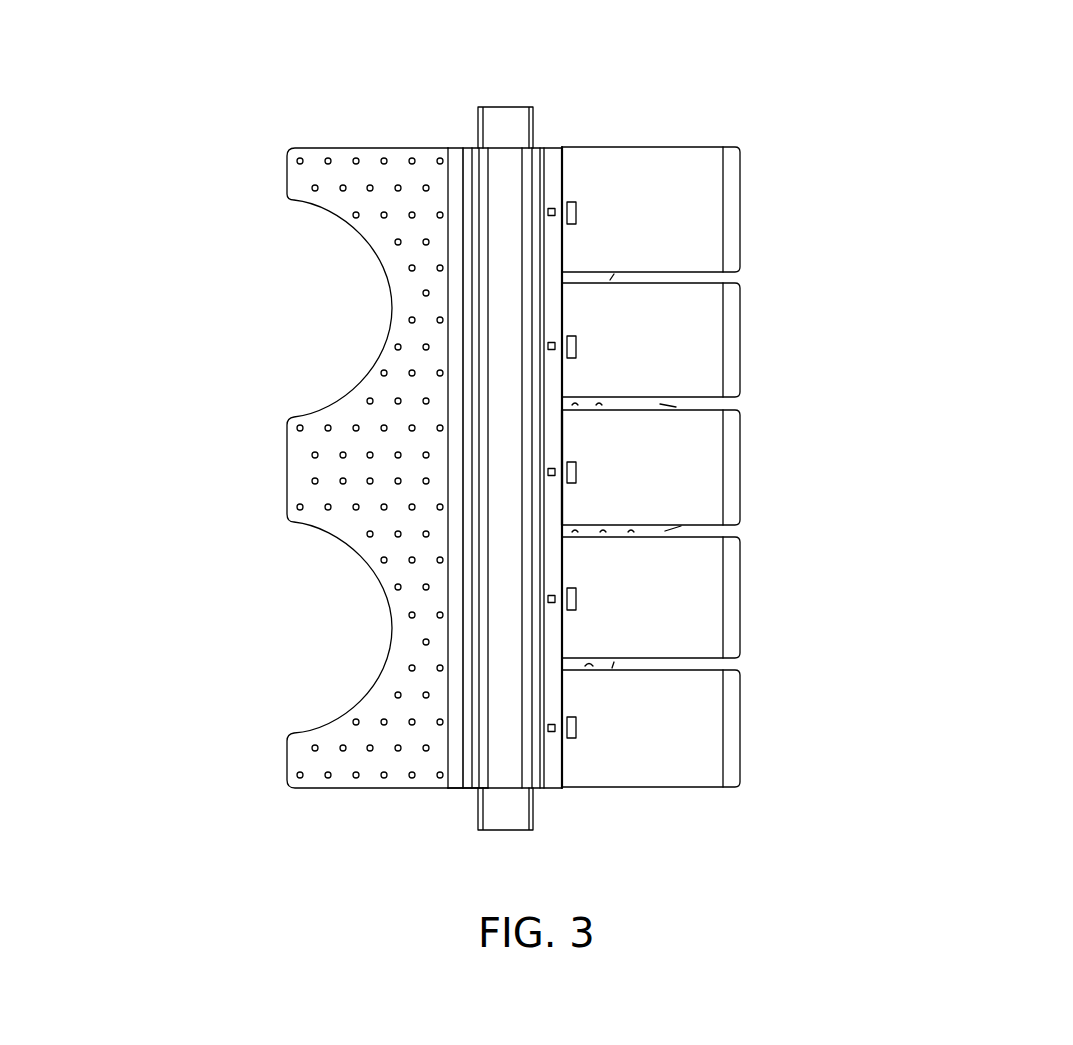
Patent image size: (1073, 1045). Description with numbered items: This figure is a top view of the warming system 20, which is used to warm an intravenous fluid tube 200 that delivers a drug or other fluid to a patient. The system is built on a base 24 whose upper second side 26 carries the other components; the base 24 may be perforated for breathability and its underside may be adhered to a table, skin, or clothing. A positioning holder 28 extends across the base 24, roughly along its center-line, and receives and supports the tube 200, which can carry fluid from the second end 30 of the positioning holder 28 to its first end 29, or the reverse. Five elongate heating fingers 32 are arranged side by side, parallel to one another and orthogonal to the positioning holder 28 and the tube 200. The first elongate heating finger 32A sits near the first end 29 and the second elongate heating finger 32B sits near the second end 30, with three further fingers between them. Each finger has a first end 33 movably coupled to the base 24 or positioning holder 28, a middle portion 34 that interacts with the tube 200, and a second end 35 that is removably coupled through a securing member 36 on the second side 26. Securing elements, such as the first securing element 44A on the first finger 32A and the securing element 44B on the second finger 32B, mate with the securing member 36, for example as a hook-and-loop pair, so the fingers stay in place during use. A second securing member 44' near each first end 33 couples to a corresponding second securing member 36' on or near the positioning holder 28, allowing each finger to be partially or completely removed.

The warming system 20 is at (202, 93).
The tube 200 is at (492, 130).
The base 24 is at (435, 315).
The second side 26 is at (332, 490).
The positioning holder 28 is at (470, 452).
The first end 29 is at (467, 790).
The second end 30 is at (540, 148).
The elongate heating fingers 32 is at (619, 166).
The first elongate heating finger 32A is at (650, 762).
The second elongate heating finger 32B is at (665, 190).
The first end 33 is at (580, 442).
The middle portion 34 is at (657, 461).
The second end 35 is at (761, 454).
The securing member 36 is at (326, 468).
The second securing member 36' is at (592, 546).
The second securing member 44' is at (634, 537).
The first securing element 44A is at (730, 742).
The securing element 44B is at (730, 188).